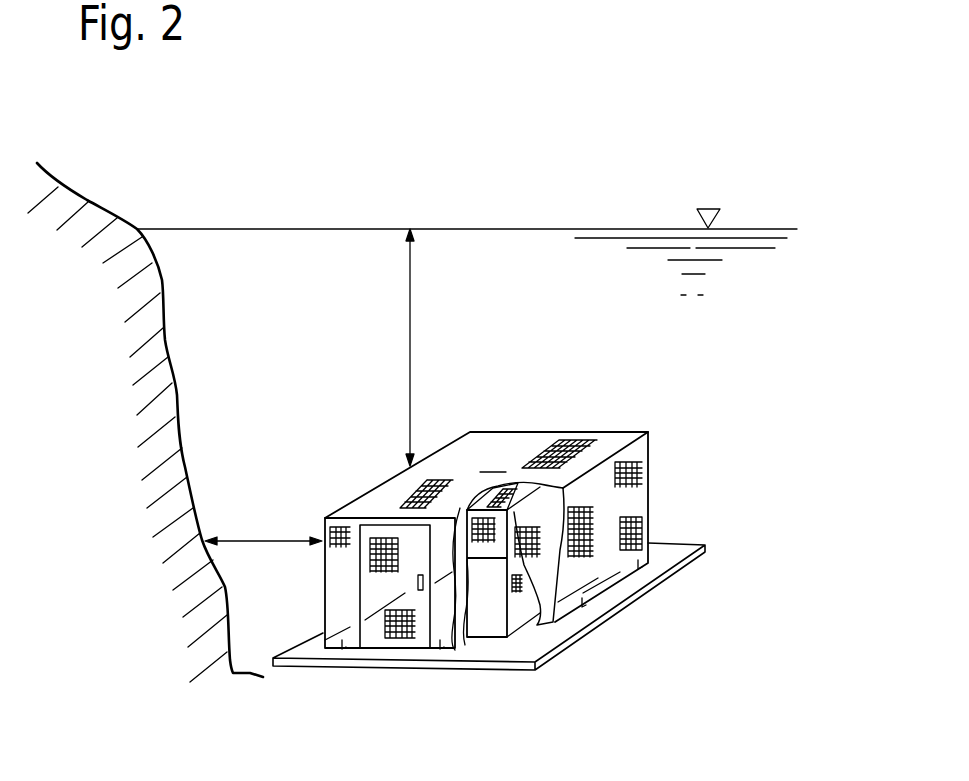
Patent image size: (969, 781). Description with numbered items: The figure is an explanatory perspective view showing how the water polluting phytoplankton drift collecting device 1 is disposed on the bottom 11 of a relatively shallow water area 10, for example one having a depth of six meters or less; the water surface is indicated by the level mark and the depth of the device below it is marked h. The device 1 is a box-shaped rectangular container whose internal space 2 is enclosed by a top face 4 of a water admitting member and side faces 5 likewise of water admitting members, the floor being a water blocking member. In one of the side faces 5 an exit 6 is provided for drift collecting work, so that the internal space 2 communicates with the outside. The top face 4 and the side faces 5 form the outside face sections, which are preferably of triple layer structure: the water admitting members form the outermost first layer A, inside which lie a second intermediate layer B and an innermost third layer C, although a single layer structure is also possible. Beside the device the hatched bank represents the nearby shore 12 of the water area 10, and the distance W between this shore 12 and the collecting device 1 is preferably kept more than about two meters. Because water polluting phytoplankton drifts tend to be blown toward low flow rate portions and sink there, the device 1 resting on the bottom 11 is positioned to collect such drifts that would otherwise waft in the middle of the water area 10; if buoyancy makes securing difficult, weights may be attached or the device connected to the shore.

The water polluting phytoplankton drift collecting device 1 is at (487, 496).
The internal space 2 is at (465, 497).
The top face 4 is at (610, 442).
The side faces 5 is at (627, 505).
The exit 6 is at (372, 587).
The water area 10 is at (712, 338).
The bottom of the water area 11 is at (663, 662).
The shore 12 is at (97, 428).
The first layer A is at (493, 455).
The second intermediate layer B is at (537, 521).
The third layer C is at (507, 617).
The depth h is at (420, 347).
The distance w W is at (263, 527).